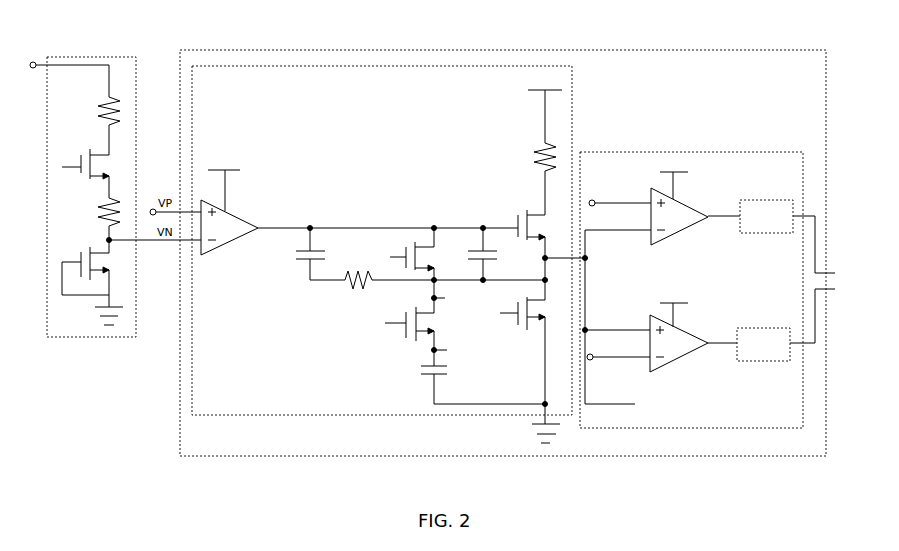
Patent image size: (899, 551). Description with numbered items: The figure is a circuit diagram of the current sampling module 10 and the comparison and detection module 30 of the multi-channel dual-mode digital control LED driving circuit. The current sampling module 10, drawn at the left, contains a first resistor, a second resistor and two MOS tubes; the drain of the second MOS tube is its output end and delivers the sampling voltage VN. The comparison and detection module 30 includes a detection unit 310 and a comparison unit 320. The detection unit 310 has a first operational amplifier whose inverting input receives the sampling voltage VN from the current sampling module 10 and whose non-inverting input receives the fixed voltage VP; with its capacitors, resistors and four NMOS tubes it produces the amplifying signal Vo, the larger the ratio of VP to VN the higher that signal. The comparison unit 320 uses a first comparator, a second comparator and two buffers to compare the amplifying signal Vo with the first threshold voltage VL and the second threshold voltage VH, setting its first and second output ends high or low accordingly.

The current sampling module 10 is at (92, 57).
The comparison and detection module 30 is at (413, 50).
The detection unit 310 is at (480, 66).
The comparison unit 320 is at (803, 173).